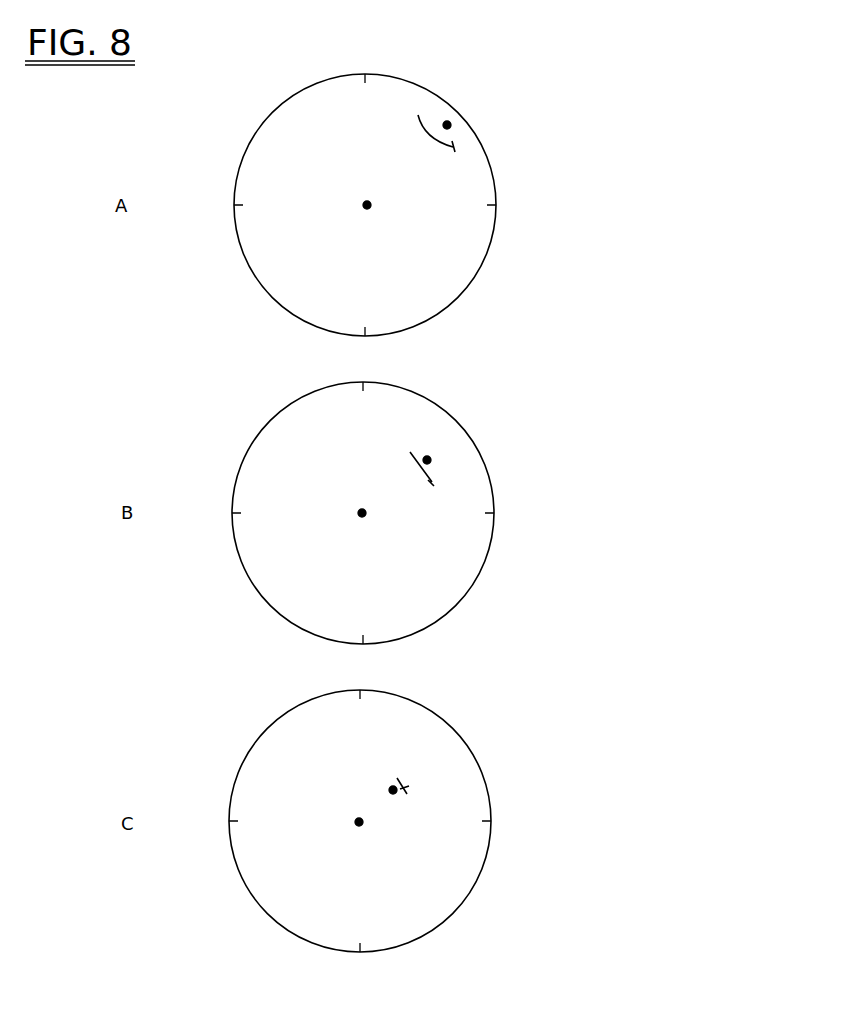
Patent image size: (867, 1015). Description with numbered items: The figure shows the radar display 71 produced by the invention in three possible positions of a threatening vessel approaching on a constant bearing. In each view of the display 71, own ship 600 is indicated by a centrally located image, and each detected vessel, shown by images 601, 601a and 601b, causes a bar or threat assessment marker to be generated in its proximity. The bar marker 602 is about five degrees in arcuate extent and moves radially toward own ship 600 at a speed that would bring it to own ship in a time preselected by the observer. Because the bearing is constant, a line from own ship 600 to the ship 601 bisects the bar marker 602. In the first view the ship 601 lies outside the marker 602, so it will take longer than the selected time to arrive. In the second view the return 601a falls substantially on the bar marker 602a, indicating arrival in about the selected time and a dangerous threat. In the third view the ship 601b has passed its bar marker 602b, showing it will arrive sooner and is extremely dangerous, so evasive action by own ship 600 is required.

The PPI display / compass rose 71 is at (472, 283).
The own ship image 600 is at (366, 202).
The detected ship image 601 is at (447, 125).
The bar marker 602 is at (455, 148).
The detected ship image 601a is at (427, 460).
The bar marker 602a is at (433, 479).
The detected ship image 601b is at (393, 790).
The bar marker 602b is at (405, 789).